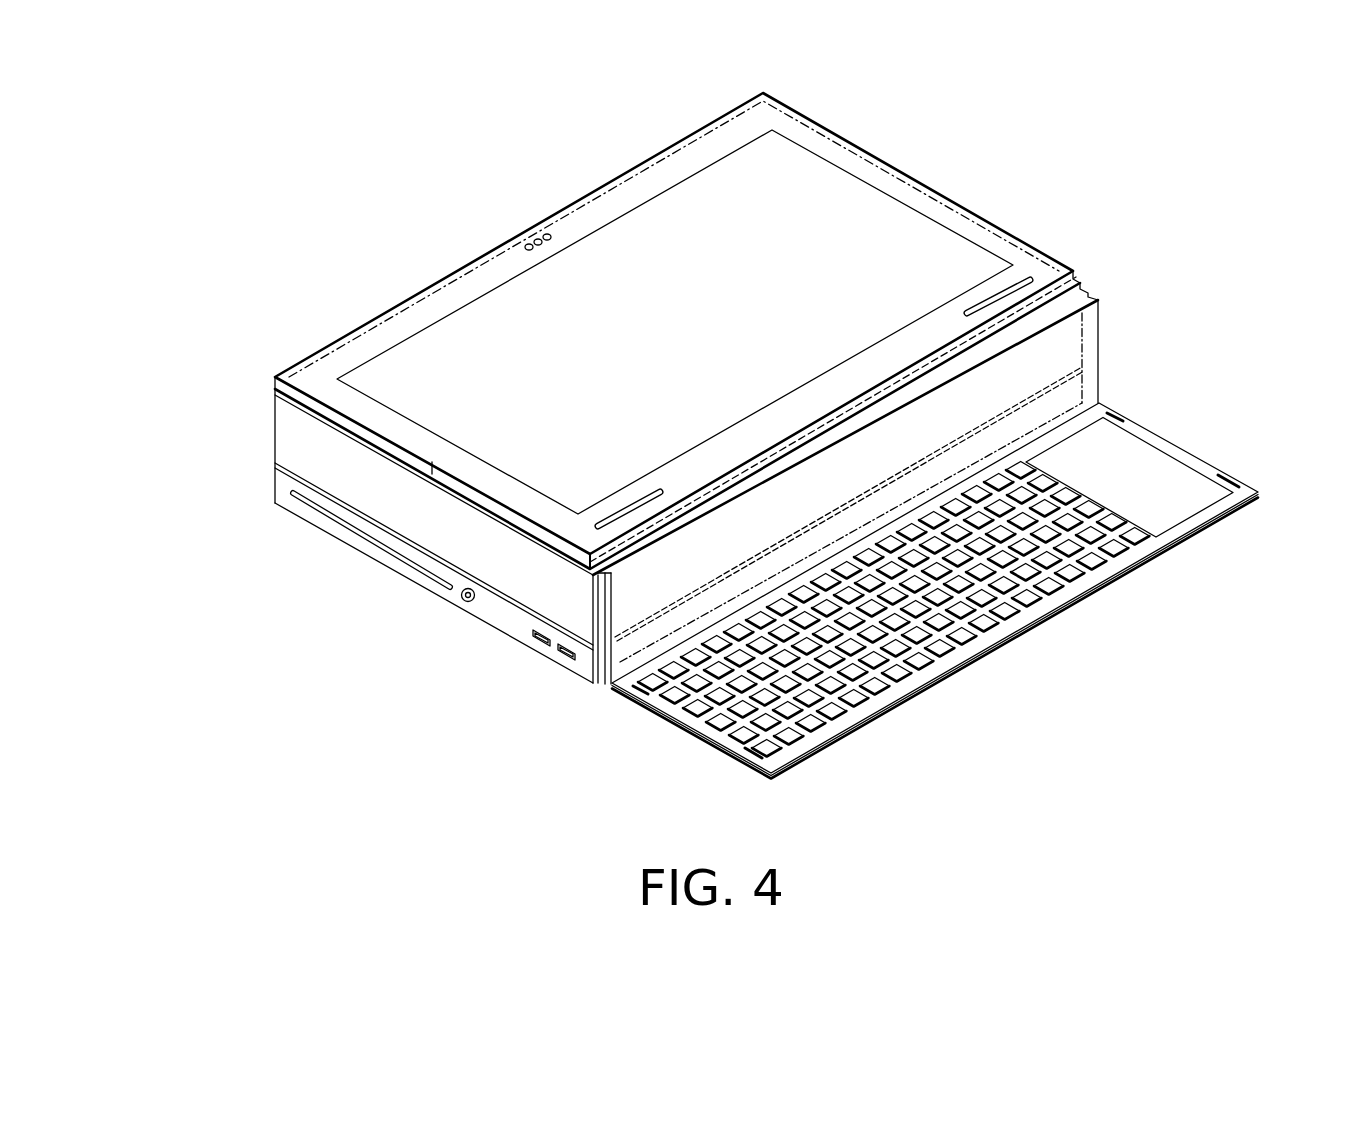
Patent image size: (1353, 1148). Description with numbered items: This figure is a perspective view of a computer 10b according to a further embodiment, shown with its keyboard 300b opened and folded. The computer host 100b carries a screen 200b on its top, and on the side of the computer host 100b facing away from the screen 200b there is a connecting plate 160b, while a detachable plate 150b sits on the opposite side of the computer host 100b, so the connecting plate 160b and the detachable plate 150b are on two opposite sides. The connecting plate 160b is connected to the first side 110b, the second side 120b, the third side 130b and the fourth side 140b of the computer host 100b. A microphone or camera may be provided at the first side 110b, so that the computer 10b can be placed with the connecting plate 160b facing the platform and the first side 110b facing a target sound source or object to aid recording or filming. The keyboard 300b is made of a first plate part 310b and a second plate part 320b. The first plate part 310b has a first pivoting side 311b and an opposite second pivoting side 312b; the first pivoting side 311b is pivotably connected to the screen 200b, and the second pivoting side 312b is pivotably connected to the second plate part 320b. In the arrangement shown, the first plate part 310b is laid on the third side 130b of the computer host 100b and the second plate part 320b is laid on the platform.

The computer 10b is at (191, 169).
The computer host 100b is at (212, 380).
The first side 110b is at (275, 417).
The second side 120b is at (325, 448).
The third side 130b is at (600, 603).
The fourth side 140b is at (1018, 250).
The detachable plate 150b is at (276, 405).
The connecting plate 160b is at (343, 505).
The screen 200b is at (493, 267).
The keyboard 300b is at (1178, 645).
The first plate part 310b is at (997, 613).
The first pivoting side 311b is at (945, 390).
The second pivoting side 312b is at (1055, 427).
The second plate part 320b is at (932, 676).